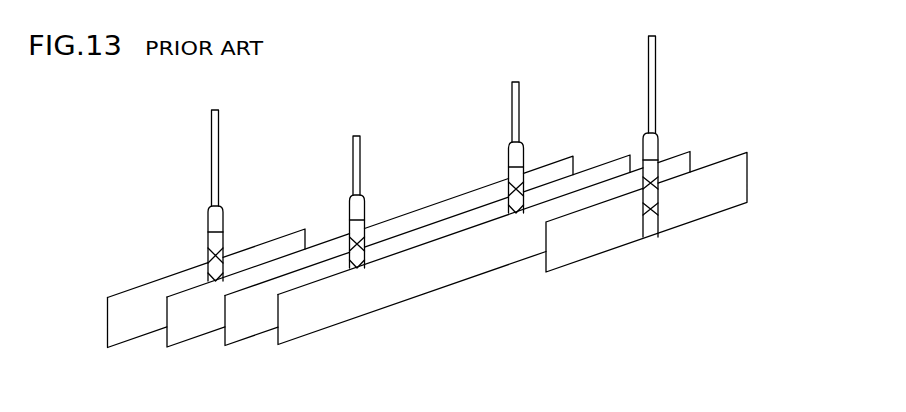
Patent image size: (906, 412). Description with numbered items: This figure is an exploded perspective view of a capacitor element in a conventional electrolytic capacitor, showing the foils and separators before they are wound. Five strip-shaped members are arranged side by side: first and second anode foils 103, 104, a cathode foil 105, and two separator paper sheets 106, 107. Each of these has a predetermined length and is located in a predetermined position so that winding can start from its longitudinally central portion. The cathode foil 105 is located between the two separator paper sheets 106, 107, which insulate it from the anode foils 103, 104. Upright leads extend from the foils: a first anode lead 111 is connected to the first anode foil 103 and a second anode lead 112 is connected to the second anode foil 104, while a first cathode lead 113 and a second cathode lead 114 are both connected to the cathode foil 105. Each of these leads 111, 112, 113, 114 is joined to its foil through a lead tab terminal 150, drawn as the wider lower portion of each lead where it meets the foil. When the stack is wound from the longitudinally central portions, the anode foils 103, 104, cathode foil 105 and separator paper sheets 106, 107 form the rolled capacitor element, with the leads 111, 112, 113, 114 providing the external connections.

The first anode foil 103 is at (597, 228).
The second anode foil 104 is at (128, 315).
The cathode foil 105 is at (243, 315).
The separator paper sheet 106 is at (328, 305).
The separator paper sheet 107 is at (185, 315).
The first anode lead 111 is at (656, 63).
The second anode lead 112 is at (211, 165).
The first cathode lead 113 is at (511, 108).
The second cathode lead 114 is at (352, 163).
The lead tab terminal 150 is at (214, 239).